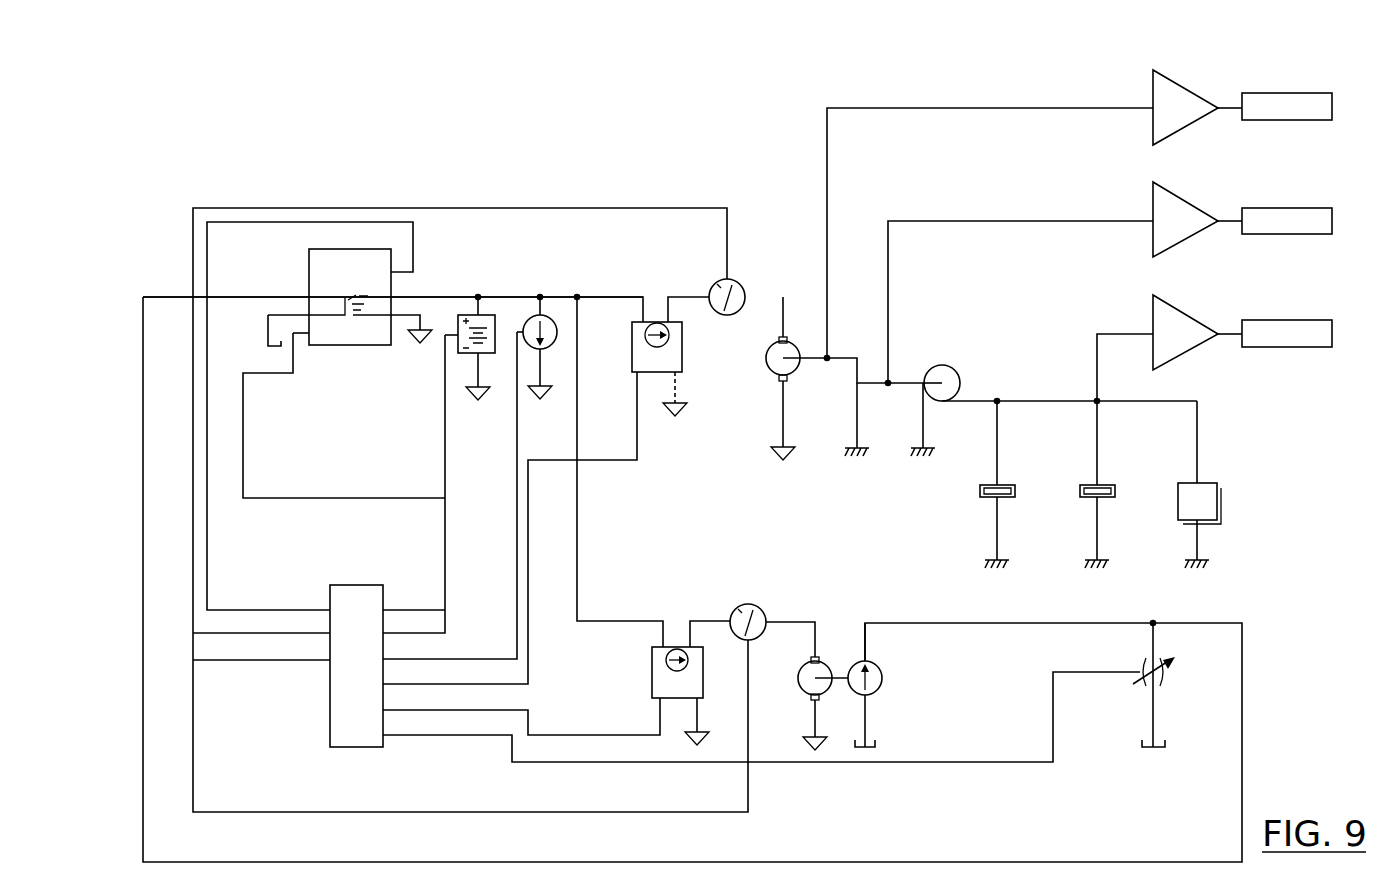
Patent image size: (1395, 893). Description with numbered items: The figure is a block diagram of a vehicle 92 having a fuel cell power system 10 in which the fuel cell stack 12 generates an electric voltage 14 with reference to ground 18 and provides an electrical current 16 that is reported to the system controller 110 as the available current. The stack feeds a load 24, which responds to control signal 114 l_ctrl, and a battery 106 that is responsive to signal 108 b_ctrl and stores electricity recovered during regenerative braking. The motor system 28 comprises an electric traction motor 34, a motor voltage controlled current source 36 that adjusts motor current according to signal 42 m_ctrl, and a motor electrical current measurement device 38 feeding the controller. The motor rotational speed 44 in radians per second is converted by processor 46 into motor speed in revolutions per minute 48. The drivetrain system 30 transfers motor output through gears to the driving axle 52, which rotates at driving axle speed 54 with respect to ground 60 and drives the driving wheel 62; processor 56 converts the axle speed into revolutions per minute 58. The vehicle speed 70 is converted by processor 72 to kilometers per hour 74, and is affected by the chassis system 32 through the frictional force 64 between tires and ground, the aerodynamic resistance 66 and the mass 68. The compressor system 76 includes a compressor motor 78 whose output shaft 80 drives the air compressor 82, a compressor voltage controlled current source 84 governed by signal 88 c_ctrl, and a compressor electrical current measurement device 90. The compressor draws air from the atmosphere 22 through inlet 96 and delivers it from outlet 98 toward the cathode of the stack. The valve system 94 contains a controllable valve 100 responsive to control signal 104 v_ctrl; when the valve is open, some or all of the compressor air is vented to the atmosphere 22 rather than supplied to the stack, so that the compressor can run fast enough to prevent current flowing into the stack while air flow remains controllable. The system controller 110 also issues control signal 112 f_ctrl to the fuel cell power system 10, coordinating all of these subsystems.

The fuel cell power system 10 is at (296, 260).
The fuel cell stack 12 is at (355, 249).
The electric voltage 14 is at (424, 297).
The electrical current 16 is at (413, 252).
The ground 18 is at (426, 318).
The atmosphere 22 is at (268, 346).
The load 24 is at (557, 334).
The motor system 28 is at (770, 390).
The drivetrain system 30 is at (888, 456).
The chassis system 32 is at (1032, 554).
The electric traction motor 34 is at (800, 361).
The motor voltage controlled current source 36 is at (632, 346).
The motor electrical current measurement device 38 is at (716, 280).
The motor control signal m_ctrl 42 is at (622, 462).
The motor rotational speed 44 is at (938, 108).
The processor 46 is at (1222, 66).
The motor speed in revolutions per minute 48 is at (1310, 66).
The driving axle 52 is at (892, 375).
The driving axle speed 54 is at (889, 279).
The processor 56 is at (1216, 178).
The axle speed in revolutions per minute 58 is at (1308, 176).
The ground 60 is at (856, 464).
The driving wheel 62 is at (960, 380).
The frictional force 64 is at (1003, 498).
The aerodynamic resistance 66 is at (1103, 498).
The mass 68 is at (1222, 519).
The vehicle speed 70 is at (1098, 386).
The processor 72 is at (1216, 290).
The vehicle speed in kilometers per hour 74 is at (1308, 290).
The compressor system 76 is at (831, 736).
The compressor motor 78 is at (797, 678).
The output shaft 80 is at (816, 657).
The air compressor 82 is at (883, 679).
The compressor voltage controlled current source 84 is at (652, 667).
The compressor control signal c_ctrl 88 is at (658, 715).
The compressor electrical current measurement device 90 is at (760, 631).
The vehicle 92 is at (1300, 682).
The valve system 94 is at (1085, 753).
The inlet 96 is at (868, 706).
The outlet 98 is at (868, 653).
The controllable valve 100 is at (1165, 680).
The valve control signal v_ctrl 104 is at (1106, 648).
The battery 106 is at (485, 316).
The battery control signal b_ctrl 108 is at (442, 426).
The system controller 110 is at (330, 690).
The fuel cell control signal f_ctrl 112 is at (245, 442).
The load control signal l_ctrl 114 is at (514, 529).